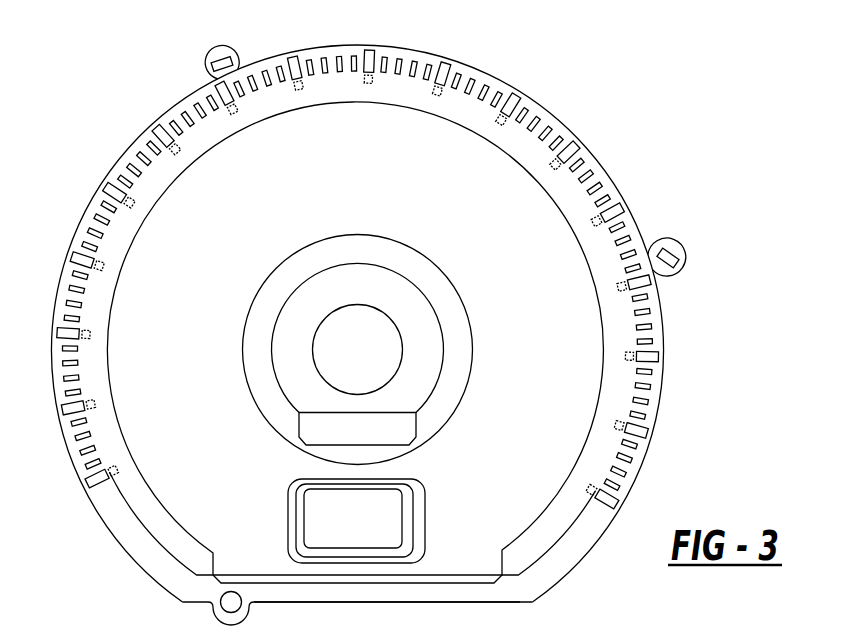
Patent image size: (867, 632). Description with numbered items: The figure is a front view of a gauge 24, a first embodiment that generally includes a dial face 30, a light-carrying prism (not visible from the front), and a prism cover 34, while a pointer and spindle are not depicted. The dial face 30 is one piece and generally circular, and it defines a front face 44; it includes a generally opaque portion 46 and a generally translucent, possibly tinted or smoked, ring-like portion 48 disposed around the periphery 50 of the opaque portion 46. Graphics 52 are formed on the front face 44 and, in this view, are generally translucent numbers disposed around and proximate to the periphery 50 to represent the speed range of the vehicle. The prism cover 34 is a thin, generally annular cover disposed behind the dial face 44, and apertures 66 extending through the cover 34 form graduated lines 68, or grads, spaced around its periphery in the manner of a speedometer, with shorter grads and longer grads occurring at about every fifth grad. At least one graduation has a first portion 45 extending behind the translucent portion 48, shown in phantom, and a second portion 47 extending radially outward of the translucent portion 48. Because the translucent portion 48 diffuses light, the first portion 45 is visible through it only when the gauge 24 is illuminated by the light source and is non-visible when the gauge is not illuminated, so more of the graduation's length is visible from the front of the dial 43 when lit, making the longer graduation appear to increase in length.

The gauge 24 is at (536, 64).
The dial face 30 is at (447, 471).
The prism cover 34 is at (642, 470).
The dial 43 is at (197, 393).
The front face 44 is at (235, 488).
The first portion of graduation 45 is at (140, 183).
The opaque portion 46 is at (245, 545).
The second portion of graduation 47 is at (102, 180).
The translucent portion 48 is at (165, 537).
The periphery 50 is at (553, 113).
The graphics 52 is at (263, 182).
The apertures 66 is at (460, 612).
The graduated lines 68 is at (387, 617).